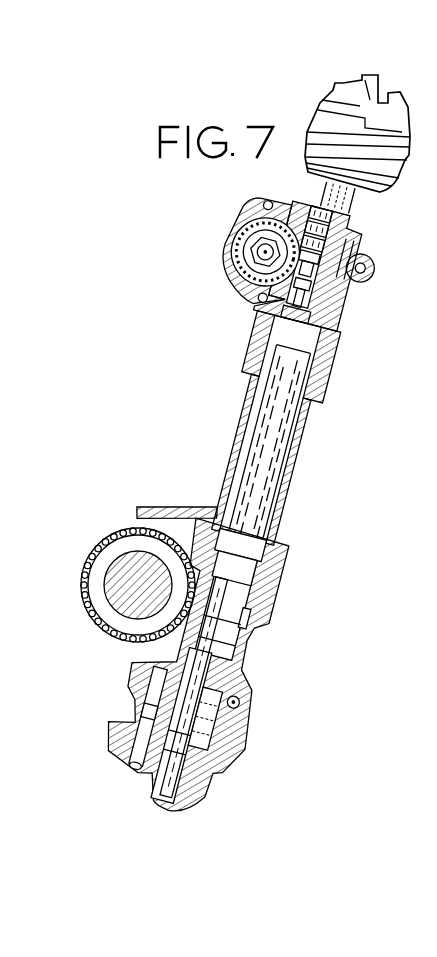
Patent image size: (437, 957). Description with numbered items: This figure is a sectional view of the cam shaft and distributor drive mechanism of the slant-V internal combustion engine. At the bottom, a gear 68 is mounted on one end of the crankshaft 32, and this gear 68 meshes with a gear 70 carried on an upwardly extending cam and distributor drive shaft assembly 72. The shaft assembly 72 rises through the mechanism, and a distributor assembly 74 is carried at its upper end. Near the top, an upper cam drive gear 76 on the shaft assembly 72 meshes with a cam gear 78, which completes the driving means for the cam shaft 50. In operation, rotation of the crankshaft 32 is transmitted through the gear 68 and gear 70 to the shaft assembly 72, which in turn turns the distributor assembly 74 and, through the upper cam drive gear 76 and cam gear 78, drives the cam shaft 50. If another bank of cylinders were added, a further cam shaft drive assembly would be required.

The crankshaft 32 is at (128, 596).
The cam shaft 50 is at (259, 258).
The gear 68 is at (104, 556).
The gear 70 is at (247, 613).
The cam and distributor drive shaft assembly 72 is at (270, 447).
The distributor assembly 74 is at (376, 178).
The upper cam drive gear 76 is at (352, 277).
The cam gear 78 is at (247, 243).